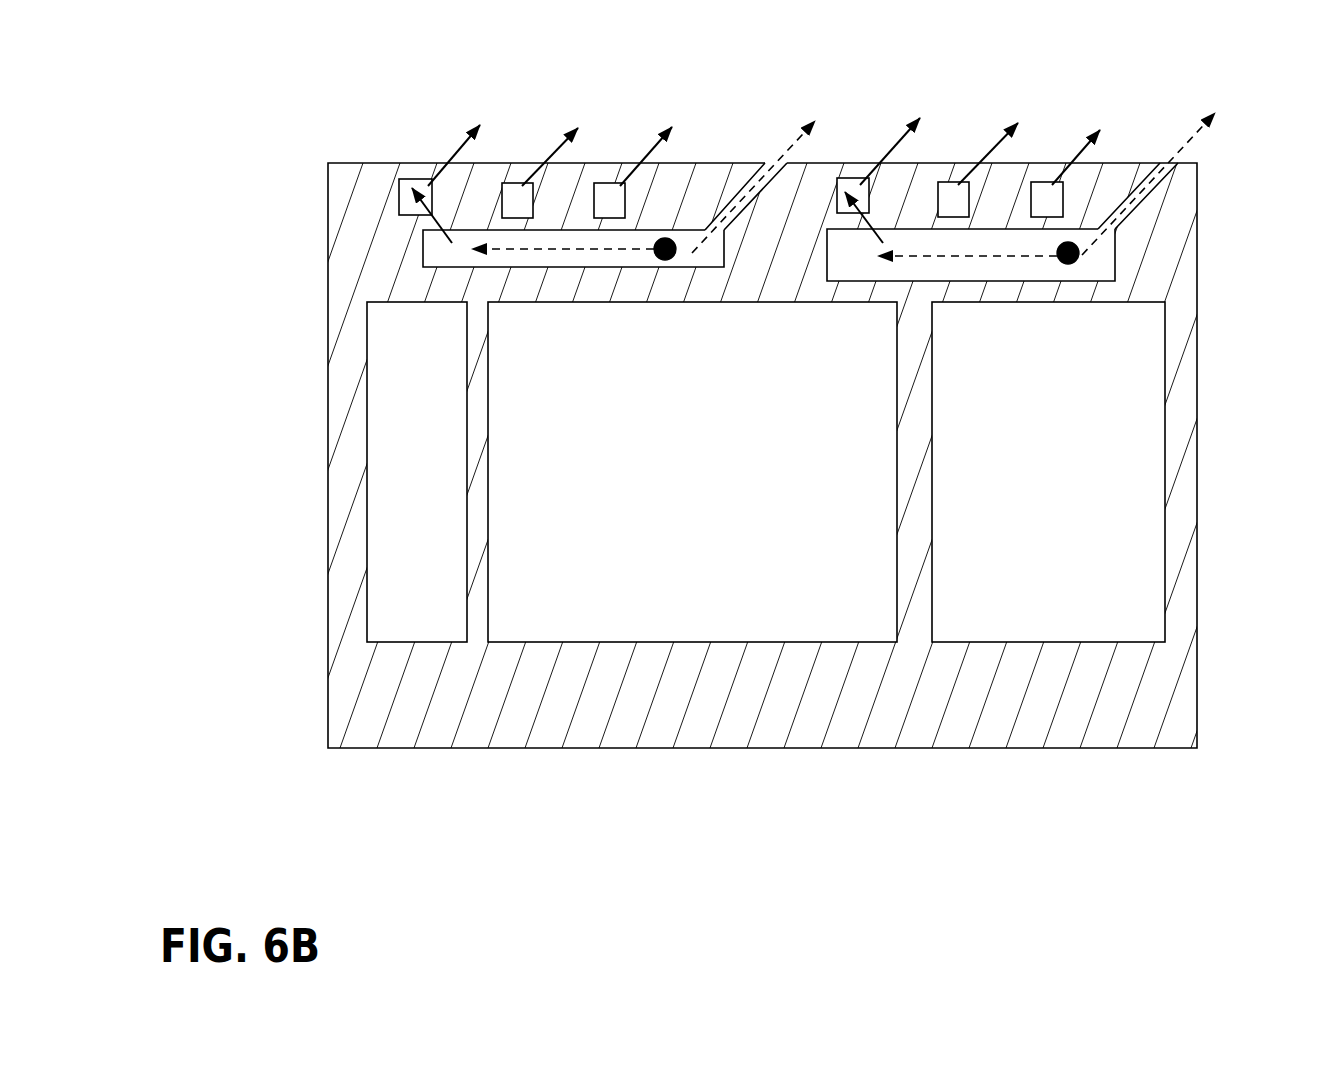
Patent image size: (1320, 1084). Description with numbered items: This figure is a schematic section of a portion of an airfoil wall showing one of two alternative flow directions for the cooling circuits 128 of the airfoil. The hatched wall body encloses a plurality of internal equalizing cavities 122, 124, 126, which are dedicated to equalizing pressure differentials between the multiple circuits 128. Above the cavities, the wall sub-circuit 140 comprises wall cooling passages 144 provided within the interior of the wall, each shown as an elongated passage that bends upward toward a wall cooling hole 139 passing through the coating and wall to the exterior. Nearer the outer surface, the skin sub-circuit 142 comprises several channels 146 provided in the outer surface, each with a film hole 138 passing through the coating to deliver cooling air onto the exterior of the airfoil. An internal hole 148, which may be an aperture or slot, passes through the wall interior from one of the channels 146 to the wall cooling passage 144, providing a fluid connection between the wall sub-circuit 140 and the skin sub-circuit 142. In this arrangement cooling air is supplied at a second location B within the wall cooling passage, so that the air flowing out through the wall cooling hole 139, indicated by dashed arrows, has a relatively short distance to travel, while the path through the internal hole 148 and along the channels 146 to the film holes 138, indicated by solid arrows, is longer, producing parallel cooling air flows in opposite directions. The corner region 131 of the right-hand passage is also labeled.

The internal equalizing cavity 122 is at (711, 477).
The internal equalizing cavity 124 is at (1069, 487).
The internal equalizing cavity 126 is at (429, 477).
The multiple circuits 128 is at (296, 75).
The channel recess 131 is at (830, 280).
The film hole 138 is at (543, 167).
The wall cooling hole 139 is at (772, 167).
The wall sub-circuit 140 is at (417, 249).
The skin sub-circuit 142 is at (392, 195).
The wall cooling passage 144 is at (715, 249).
The channel 146 is at (613, 192).
The internal hole 148 is at (443, 232).
The second location B is at (665, 249).